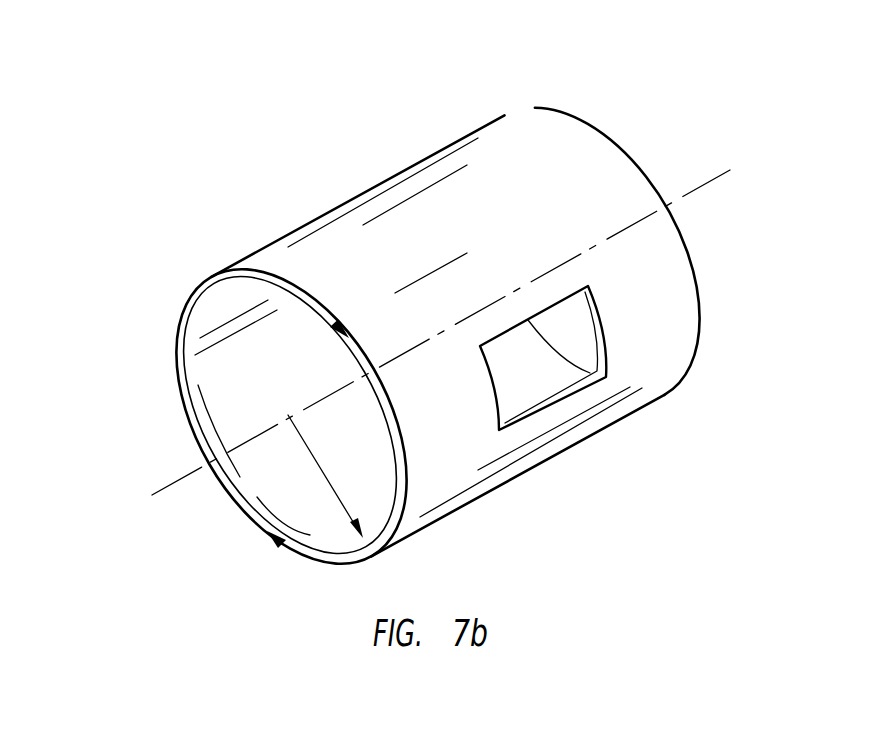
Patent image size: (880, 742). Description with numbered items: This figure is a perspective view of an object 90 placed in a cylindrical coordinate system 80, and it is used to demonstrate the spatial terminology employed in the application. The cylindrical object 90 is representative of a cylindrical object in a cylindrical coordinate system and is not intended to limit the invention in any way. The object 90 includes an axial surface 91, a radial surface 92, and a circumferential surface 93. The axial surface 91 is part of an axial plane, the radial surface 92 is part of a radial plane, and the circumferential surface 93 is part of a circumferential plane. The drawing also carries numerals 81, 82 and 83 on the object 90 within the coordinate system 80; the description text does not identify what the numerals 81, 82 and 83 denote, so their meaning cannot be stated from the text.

The cylindrical coordinate system 80 is at (395, 316).
The longitudinal axis 81 is at (163, 490).
The lumen 82 is at (330, 485).
The open end 83 is at (185, 305).
The object 90 is at (395, 316).
The axial surface 91 is at (569, 386).
The radial surface 92 is at (306, 553).
The circumferential surface 93 is at (412, 217).